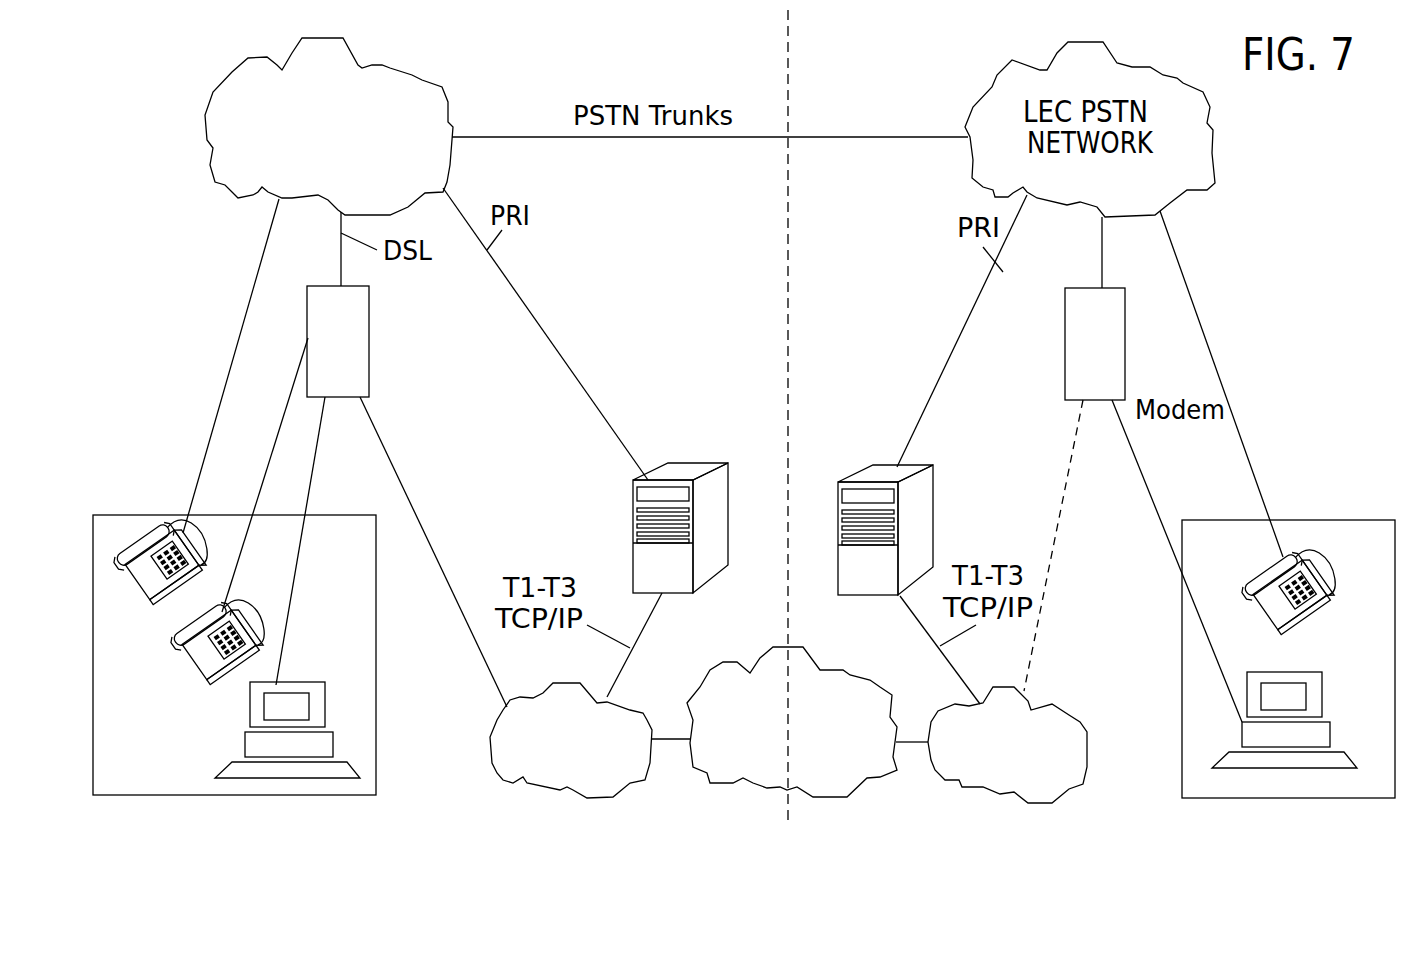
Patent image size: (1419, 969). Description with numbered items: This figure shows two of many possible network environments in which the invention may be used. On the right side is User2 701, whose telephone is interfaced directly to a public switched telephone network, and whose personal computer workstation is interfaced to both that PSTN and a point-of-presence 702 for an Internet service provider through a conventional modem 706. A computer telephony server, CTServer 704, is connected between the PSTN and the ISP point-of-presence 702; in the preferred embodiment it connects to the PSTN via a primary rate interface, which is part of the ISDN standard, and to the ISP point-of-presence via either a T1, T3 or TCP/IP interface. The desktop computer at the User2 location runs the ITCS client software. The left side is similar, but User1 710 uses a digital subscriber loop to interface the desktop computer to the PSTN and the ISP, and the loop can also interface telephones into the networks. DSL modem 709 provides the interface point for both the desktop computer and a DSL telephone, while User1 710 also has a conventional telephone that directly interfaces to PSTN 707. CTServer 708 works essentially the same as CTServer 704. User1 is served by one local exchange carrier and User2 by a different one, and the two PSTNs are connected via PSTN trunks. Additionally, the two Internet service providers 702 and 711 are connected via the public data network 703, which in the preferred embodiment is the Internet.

The User2 701 is at (1345, 518).
The point-of-presence 702 is at (1050, 698).
The public data network 703 is at (737, 662).
The computer telephony server 704 is at (880, 470).
The conventional modem 706 is at (1116, 355).
The PSTN 707 is at (392, 68).
The CTServer 708 is at (697, 462).
The DSL modem 709 is at (361, 352).
The User1 710 is at (152, 517).
The Internet service provider 711 is at (495, 775).